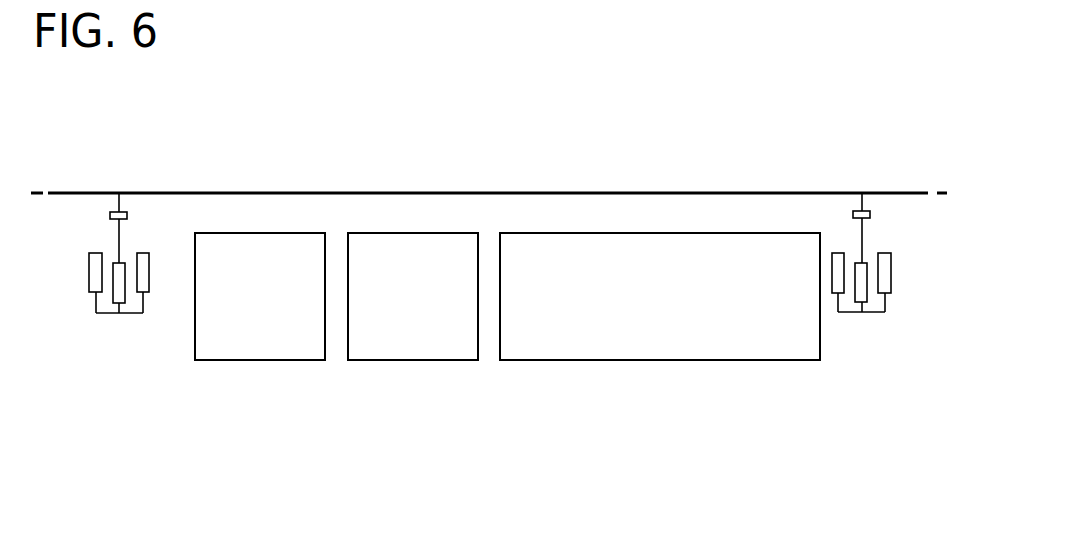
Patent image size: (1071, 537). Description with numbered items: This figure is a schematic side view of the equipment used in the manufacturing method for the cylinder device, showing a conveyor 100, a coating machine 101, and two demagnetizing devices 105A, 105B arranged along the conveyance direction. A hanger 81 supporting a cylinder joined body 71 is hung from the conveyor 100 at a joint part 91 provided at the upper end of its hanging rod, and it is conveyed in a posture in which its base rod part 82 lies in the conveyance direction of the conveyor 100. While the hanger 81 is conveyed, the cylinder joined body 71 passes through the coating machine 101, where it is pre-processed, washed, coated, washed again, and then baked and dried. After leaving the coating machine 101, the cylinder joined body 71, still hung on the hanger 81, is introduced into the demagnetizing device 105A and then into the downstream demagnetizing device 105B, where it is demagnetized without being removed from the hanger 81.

The conveyor 100 is at (897, 192).
The coating machine 101 is at (635, 361).
The demagnetizing device 105A is at (410, 361).
The demagnetizing device 105B is at (258, 361).
The joint part 91 is at (110, 215).
The cylinder joined body 71 is at (89, 270).
The hanger 81 is at (105, 322).
The base rod part 82 is at (127, 314).